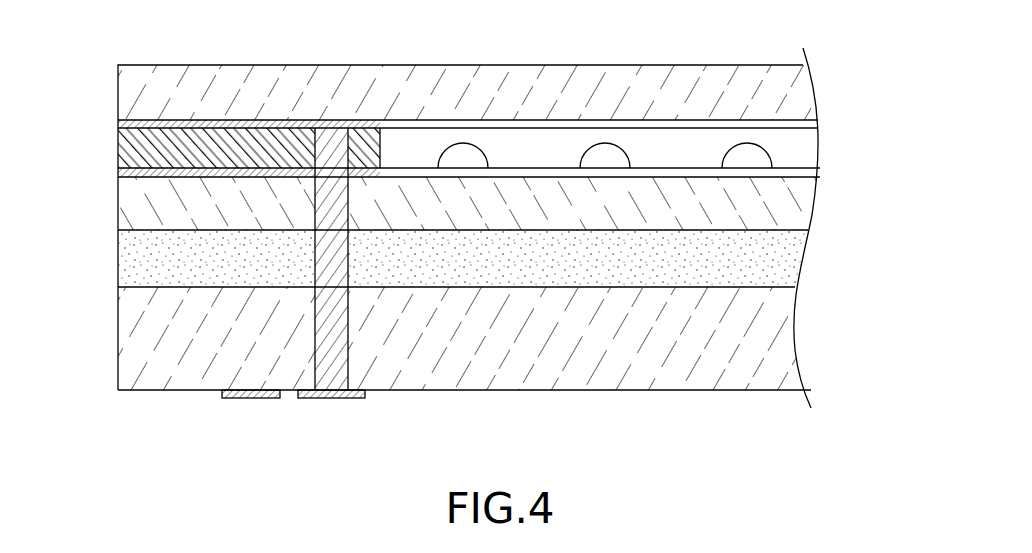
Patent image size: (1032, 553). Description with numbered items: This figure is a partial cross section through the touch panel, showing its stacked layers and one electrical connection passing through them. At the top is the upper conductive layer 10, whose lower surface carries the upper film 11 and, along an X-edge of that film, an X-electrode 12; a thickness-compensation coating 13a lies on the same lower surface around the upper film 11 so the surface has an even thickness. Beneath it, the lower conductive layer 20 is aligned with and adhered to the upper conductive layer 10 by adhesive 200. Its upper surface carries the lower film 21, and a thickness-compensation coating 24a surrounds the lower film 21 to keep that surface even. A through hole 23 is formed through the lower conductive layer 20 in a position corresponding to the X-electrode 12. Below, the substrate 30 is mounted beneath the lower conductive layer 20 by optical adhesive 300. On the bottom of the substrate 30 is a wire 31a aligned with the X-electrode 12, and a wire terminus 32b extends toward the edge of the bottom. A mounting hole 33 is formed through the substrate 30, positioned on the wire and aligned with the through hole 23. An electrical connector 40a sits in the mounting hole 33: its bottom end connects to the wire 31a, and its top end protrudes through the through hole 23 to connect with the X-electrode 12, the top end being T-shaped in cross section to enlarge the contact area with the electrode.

The upper conductive layer 10 is at (180, 80).
The upper film 11 is at (568, 124).
The X-electrode 12 is at (337, 125).
The thickness-compensation coating 13a is at (218, 124).
The lower conductive layer 20 is at (145, 203).
The lower film 21 is at (677, 174).
The through hole 23 is at (348, 203).
The thickness-compensation coating 24a is at (130, 172).
The substrate 30 is at (150, 337).
The wire 31a is at (330, 400).
The terminus 32b is at (247, 399).
The mounting hole 33 is at (338, 348).
The electrical connector 40a is at (328, 260).
The adhesive 200 is at (128, 144).
The optical adhesive 300 is at (145, 258).